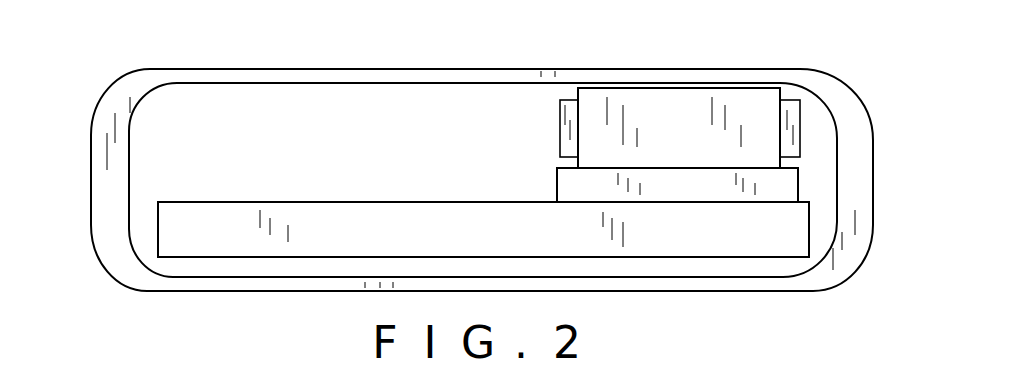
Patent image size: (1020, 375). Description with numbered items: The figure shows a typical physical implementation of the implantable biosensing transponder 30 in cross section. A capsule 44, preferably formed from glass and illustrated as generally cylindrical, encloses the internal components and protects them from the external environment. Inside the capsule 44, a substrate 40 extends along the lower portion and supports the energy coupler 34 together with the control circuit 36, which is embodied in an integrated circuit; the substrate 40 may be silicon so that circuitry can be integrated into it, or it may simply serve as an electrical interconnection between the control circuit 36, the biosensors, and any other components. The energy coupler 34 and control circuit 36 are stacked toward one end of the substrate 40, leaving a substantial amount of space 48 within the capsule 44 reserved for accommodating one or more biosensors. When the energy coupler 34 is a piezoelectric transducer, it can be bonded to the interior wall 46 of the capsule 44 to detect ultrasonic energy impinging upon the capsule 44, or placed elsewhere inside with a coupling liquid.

The biosensing transponder 30 is at (115, 68).
The energy coupler 34 is at (577, 91).
The control circuit 36 is at (800, 180).
The substrate 40 is at (668, 257).
The capsule 44 is at (107, 258).
The interior wall 46 is at (357, 84).
The space 48 is at (278, 138).